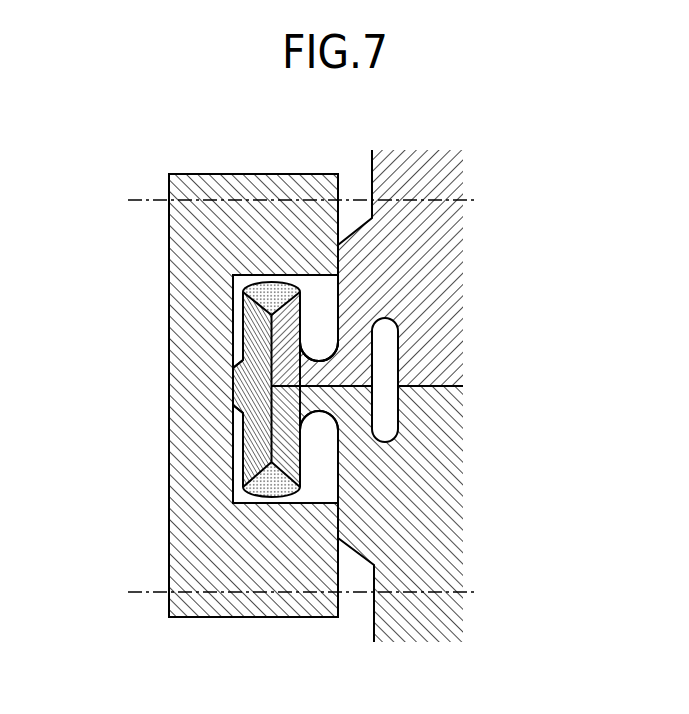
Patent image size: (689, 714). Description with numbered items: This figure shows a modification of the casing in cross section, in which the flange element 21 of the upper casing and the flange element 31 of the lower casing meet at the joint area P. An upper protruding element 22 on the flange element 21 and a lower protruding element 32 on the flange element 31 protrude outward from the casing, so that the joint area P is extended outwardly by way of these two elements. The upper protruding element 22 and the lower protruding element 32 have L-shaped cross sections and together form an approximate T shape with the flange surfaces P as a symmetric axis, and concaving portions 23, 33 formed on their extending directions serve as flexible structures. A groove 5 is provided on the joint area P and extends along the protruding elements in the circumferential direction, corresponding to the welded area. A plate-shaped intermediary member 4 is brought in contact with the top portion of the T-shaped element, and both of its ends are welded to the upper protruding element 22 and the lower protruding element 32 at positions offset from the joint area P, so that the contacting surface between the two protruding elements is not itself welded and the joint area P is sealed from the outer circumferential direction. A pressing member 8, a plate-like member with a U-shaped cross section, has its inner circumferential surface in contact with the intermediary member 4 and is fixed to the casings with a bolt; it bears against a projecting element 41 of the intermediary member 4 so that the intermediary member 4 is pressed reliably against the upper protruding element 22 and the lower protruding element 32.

The pressing member 8 is at (223, 618).
The flange element 21 is at (372, 168).
The upper protruding element 22 is at (301, 302).
The concaving portion 23 is at (317, 320).
The flange element 31 is at (375, 632).
The lower protruding element 32 is at (302, 470).
The concaving portion 33 is at (322, 443).
The joint area P is at (463, 368).
The groove 5 is at (387, 413).
The intermediary member 4 is at (245, 457).
The projecting element 41 is at (235, 405).